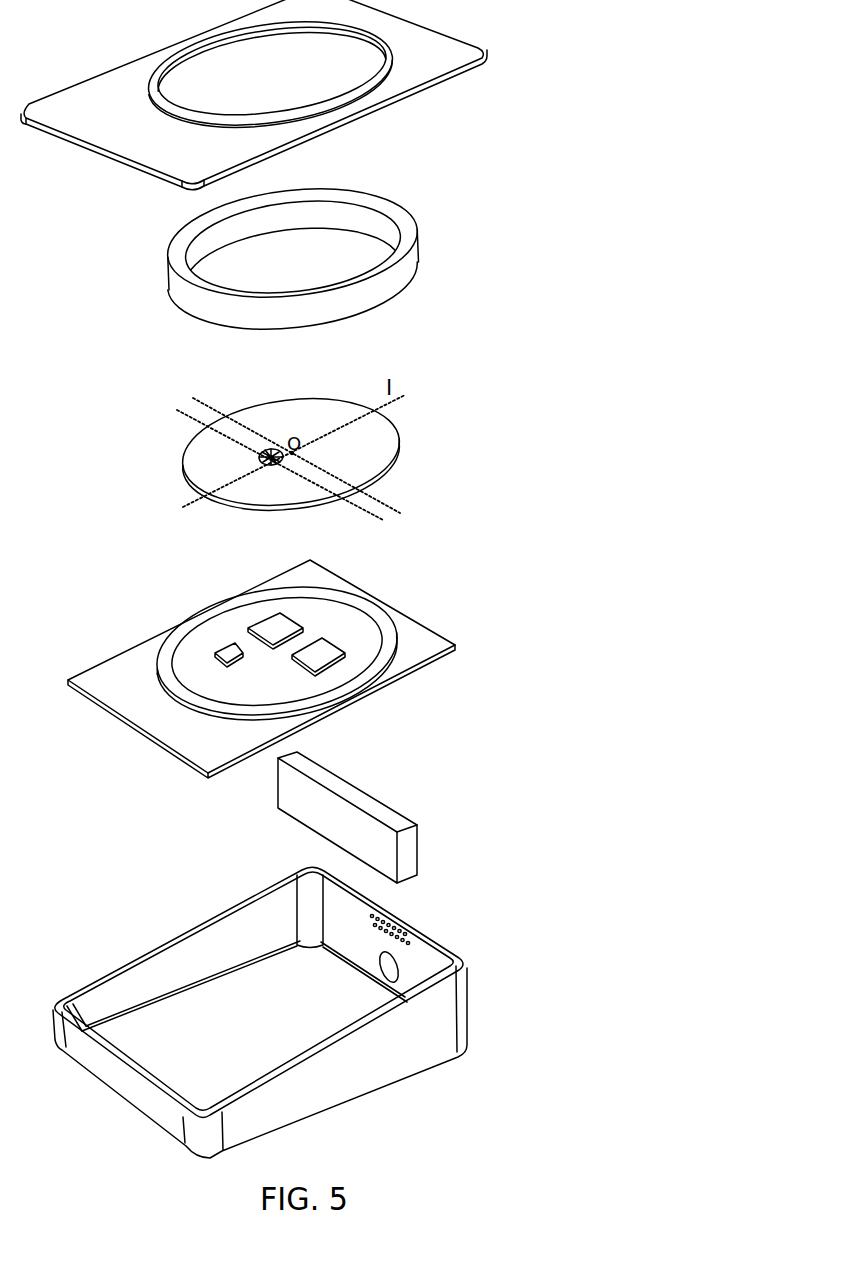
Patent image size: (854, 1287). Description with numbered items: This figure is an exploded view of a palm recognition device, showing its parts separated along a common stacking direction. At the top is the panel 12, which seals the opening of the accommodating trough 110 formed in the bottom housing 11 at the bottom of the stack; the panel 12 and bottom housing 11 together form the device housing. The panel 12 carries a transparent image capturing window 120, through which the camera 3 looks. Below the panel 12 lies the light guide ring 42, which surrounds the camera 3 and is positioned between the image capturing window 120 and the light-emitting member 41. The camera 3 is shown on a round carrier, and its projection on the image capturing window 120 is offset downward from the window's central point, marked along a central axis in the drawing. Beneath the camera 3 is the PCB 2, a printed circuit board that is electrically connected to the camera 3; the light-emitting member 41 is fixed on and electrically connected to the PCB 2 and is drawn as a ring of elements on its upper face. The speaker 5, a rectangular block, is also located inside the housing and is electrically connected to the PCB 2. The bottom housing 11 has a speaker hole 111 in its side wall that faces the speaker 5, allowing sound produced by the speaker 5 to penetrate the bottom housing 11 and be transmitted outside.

The panel 12 is at (394, 58).
The image capturing window 120 is at (270, 83).
The light guide ring 42 is at (378, 270).
The camera 3 is at (268, 453).
The PCB 2 is at (413, 625).
The light-emitting member 41 is at (330, 592).
The speaker 5 is at (345, 788).
The bottom housing 11 is at (314, 1012).
The accommodating trough 110 is at (253, 980).
The speaker hole 111 is at (395, 928).